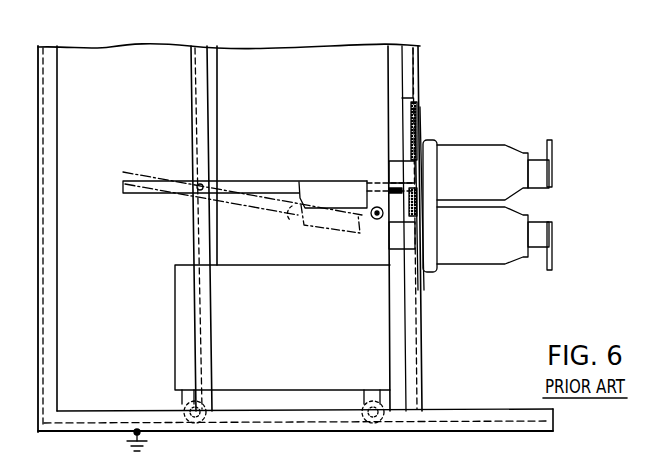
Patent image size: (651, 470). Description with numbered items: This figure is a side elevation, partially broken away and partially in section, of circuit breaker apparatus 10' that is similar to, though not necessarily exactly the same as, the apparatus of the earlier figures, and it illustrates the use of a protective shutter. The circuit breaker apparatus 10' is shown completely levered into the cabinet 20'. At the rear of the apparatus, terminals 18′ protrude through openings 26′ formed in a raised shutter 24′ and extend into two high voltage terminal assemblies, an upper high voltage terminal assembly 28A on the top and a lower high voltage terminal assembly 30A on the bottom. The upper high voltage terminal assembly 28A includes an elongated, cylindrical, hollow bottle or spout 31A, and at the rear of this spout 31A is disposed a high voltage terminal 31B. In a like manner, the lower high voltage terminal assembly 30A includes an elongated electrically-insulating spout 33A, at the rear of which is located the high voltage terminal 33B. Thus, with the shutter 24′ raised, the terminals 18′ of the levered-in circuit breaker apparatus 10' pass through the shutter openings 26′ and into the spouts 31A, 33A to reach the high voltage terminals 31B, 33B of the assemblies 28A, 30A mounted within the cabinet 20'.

The circuit breaker apparatus 10' is at (282, 360).
The cabinet 20' is at (295, 237).
The raised shutter 24′ is at (401, 106).
The openings 26′ is at (410, 128).
The terminals 18′ is at (400, 157).
The high voltage terminal assembly 28A is at (475, 148).
The high voltage terminal assembly 30A is at (489, 262).
The bottle or spout 31A is at (522, 202).
The high voltage terminal 31B is at (553, 170).
The electrically-insulating spout 33A is at (540, 250).
The high voltage terminal 33B is at (553, 240).